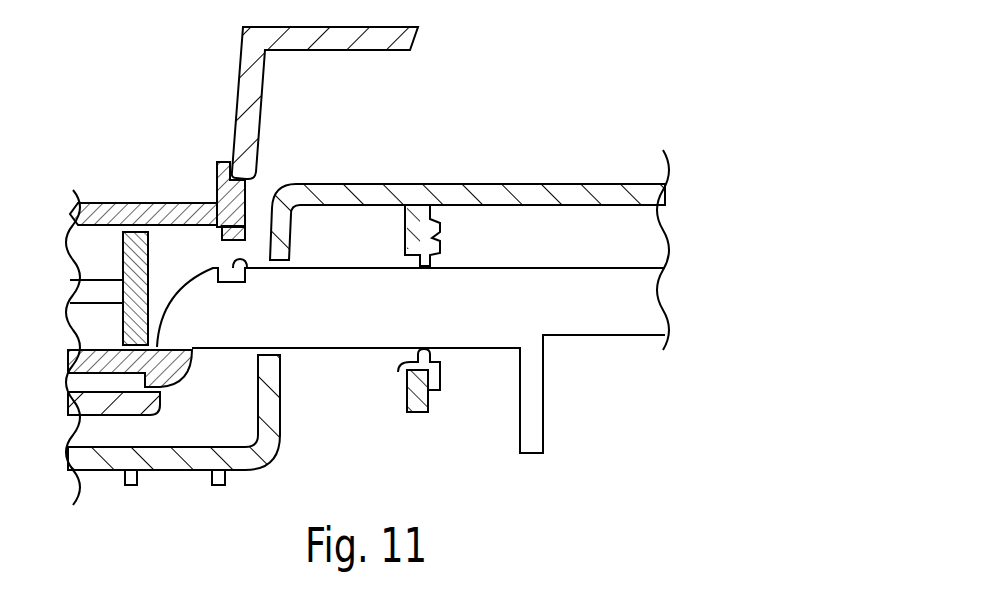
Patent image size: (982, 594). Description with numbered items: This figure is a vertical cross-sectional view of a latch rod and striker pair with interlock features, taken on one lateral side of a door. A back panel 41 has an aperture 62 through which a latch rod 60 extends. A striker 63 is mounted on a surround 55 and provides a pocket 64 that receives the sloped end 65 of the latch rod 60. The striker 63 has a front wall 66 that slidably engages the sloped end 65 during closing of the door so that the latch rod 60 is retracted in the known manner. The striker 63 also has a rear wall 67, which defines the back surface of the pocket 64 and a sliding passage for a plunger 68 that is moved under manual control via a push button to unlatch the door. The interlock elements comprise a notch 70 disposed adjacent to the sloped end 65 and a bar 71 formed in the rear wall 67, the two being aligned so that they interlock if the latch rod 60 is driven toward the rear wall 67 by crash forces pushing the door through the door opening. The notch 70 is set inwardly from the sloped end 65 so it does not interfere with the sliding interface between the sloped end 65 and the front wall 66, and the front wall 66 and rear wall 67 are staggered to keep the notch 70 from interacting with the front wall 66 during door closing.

The back panel 41 is at (580, 183).
The surround 55 is at (318, 52).
The latch rod 60 is at (340, 352).
The aperture 62 is at (290, 262).
The striker 63 is at (120, 200).
The pocket 64 is at (163, 262).
The sloped end 65 is at (160, 320).
The front wall 66 is at (178, 376).
The rear wall 67 is at (185, 216).
The plunger 68 is at (123, 250).
The notch 70 is at (243, 266).
The bar 71 is at (248, 232).